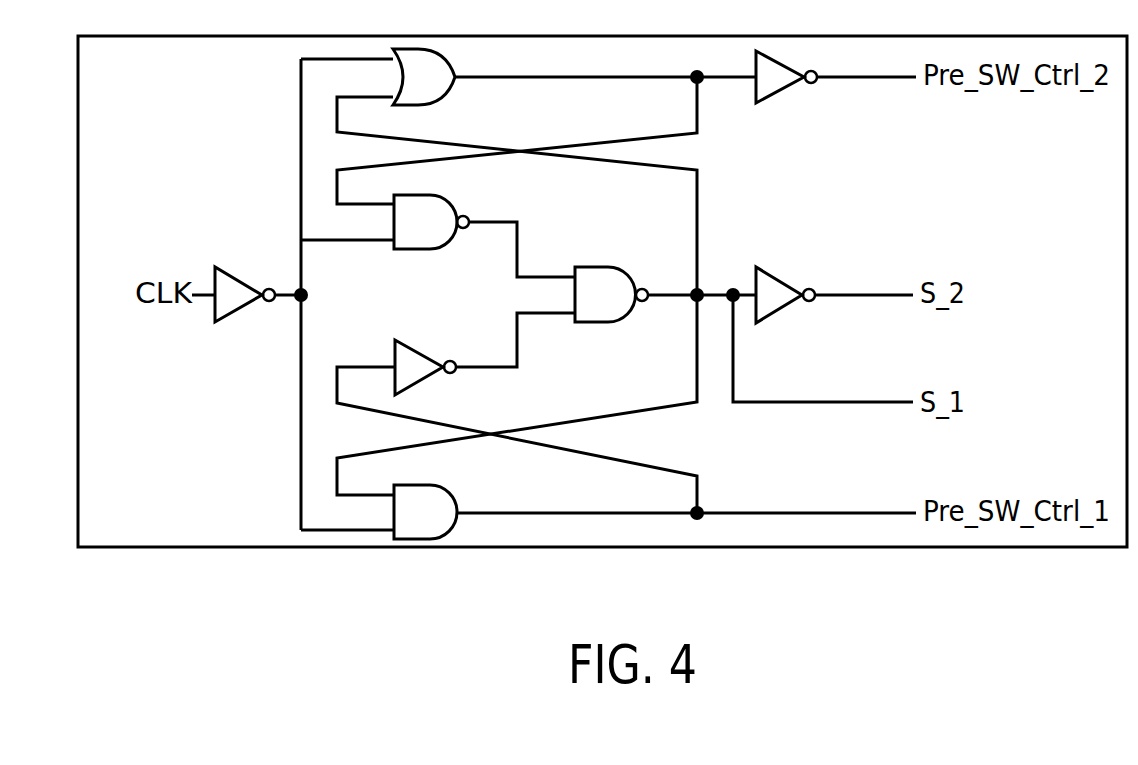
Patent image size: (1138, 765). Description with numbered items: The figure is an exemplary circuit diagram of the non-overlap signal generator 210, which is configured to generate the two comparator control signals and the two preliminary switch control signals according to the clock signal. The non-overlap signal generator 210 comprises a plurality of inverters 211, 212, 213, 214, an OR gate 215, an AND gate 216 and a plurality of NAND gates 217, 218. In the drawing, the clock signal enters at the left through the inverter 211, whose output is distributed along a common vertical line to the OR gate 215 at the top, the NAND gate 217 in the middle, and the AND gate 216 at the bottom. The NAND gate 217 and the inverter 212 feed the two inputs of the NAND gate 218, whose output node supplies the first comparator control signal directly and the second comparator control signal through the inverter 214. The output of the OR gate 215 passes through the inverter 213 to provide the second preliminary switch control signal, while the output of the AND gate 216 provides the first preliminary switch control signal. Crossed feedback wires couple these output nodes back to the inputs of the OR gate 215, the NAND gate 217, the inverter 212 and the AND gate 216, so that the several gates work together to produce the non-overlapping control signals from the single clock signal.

The non-overlap signal generator 210 is at (165, 508).
The inverter 211 is at (233, 272).
The inverter 212 is at (413, 346).
The inverter 213 is at (780, 95).
The inverter 214 is at (775, 276).
The OR gate 215 is at (436, 78).
The AND gate 216 is at (430, 496).
The NAND gate 217 is at (430, 206).
The NAND gate 218 is at (597, 272).